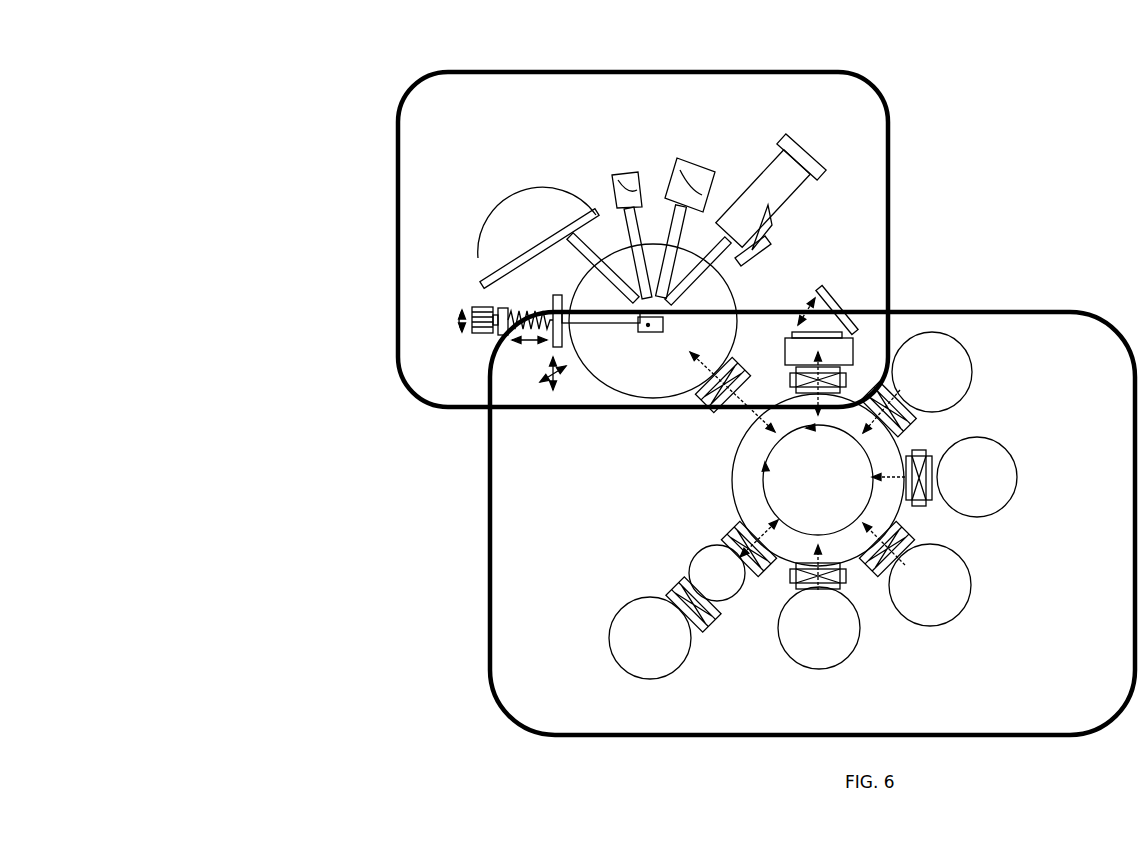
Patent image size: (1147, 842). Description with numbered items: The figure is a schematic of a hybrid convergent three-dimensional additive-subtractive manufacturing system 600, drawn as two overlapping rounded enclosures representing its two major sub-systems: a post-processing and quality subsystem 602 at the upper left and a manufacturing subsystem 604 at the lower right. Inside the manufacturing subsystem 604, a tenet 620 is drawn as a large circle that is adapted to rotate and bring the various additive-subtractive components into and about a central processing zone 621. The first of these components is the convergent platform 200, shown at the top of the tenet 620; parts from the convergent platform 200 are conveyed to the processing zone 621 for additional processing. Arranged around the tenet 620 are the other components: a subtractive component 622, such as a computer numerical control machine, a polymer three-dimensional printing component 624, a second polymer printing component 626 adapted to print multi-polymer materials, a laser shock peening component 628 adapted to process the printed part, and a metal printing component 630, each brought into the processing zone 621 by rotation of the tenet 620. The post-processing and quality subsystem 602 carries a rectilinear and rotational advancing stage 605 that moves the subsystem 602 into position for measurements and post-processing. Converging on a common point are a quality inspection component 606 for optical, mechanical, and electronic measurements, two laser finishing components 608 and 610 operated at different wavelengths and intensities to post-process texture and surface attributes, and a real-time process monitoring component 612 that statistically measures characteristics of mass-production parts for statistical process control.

The hybrid convergent 3D additive-subtractive manufacturing system 600 is at (266, 57).
The post-processing and quality subsystem 602 is at (381, 187).
The manufacturing subsystem 604 is at (475, 600).
The rectilinear and rotational advancing stage 605 is at (470, 305).
The quality inspection component 606 is at (503, 228).
The laser finishing component 608 is at (612, 190).
The laser finishing component 610 is at (700, 186).
The real-time process monitoring component 612 is at (790, 170).
The convergent platform 200 is at (828, 283).
The tenet 620 is at (745, 470).
The processing zone 621 is at (817, 479).
The subtractive component 622 is at (620, 587).
The polymer 3D printing component 624 is at (857, 657).
The second polymer printing component 626 is at (963, 635).
The laser shock peening component 628 is at (1015, 515).
The metal printing component 630 is at (972, 397).